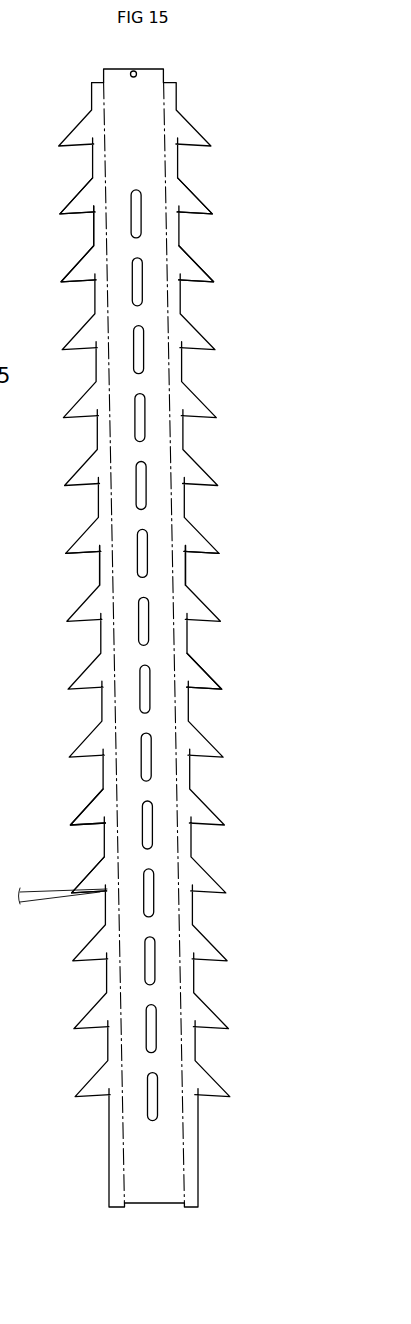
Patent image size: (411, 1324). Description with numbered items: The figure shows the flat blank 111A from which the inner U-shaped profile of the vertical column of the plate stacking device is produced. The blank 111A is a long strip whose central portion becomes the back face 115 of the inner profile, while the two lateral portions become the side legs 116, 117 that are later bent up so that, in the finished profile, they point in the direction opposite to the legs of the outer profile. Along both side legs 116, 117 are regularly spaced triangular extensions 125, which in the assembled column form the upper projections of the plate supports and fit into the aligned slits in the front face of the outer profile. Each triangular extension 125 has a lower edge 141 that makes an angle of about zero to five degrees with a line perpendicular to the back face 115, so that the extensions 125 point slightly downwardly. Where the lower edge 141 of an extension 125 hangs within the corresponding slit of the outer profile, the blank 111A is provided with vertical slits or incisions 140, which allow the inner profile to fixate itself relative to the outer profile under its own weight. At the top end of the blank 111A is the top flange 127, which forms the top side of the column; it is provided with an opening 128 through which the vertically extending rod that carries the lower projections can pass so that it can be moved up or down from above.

The blank 111A is at (196, 379).
The back face 115 is at (167, 760).
The side leg 116 is at (197, 672).
The side leg 117 is at (92, 815).
The triangular extensions 125 is at (192, 270).
The top flange 127 is at (152, 75).
The opening 128 is at (129, 72).
The vertical slits or incisions 140 is at (187, 545).
The lower edge 141 is at (100, 890).